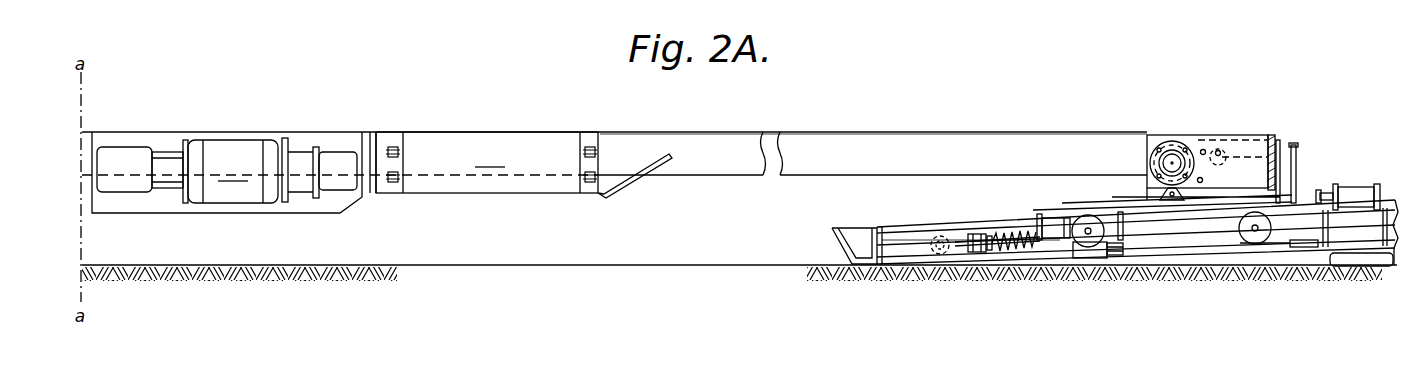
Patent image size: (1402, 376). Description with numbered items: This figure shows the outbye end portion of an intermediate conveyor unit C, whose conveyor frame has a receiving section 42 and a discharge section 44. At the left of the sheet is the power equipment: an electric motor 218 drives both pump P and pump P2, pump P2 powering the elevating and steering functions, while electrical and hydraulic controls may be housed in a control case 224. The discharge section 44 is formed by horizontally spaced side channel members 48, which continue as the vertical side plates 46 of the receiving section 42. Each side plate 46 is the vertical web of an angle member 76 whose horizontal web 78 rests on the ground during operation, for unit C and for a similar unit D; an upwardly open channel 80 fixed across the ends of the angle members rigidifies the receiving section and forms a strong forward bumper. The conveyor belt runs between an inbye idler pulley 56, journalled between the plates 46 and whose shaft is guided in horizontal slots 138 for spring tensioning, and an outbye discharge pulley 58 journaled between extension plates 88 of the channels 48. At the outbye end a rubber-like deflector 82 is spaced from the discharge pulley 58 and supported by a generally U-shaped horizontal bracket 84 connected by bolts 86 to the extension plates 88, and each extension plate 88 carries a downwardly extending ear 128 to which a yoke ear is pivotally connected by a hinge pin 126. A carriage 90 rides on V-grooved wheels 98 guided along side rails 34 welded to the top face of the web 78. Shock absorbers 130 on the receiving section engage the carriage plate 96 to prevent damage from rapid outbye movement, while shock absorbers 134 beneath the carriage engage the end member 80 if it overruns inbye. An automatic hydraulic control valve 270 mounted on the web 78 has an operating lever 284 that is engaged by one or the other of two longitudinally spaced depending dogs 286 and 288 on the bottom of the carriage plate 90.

The conveyor unit C is at (287, 118).
The pump P is at (124, 169).
The pump P2 is at (338, 171).
The electric motor 218 is at (233, 171).
The control case 224 is at (487, 162).
The discharge section 44 is at (727, 129).
The side channel member 48 is at (687, 173).
The upwardly open channel 80 is at (847, 232).
The angle member 76 is at (890, 228).
The side plate 46 is at (902, 232).
The inbye idler pulley 56 is at (942, 236).
The horizontal slot 138 is at (908, 250).
The horizontal web 78 is at (1004, 262).
The shock absorber 134 is at (1048, 222).
The depending dog 288 is at (1083, 210).
The V-grooved wheel 98 is at (1083, 257).
The automatic hydraulic control valve 270 is at (1098, 247).
The operating lever 284 is at (1144, 238).
The rubber-like deflector 82 is at (1240, 135).
The U-shaped horizontal bracket 84 is at (1277, 135).
The outbye idler pulley 58 is at (1162, 141).
The bolt 86 is at (1220, 140).
The extension plate 88 is at (1208, 167).
The downwardly extending ear 128 is at (1150, 184).
The hinge pin 126 is at (1173, 200).
The carriage plate 96 is at (1297, 160).
The receiving section 42 is at (1318, 178).
The conveyor unit D is at (1389, 168).
The shock absorber 130 is at (1356, 188).
The side rail 34 is at (1300, 250).
The carriage 90 is at (1303, 232).
The depending dog 286 is at (1277, 250).